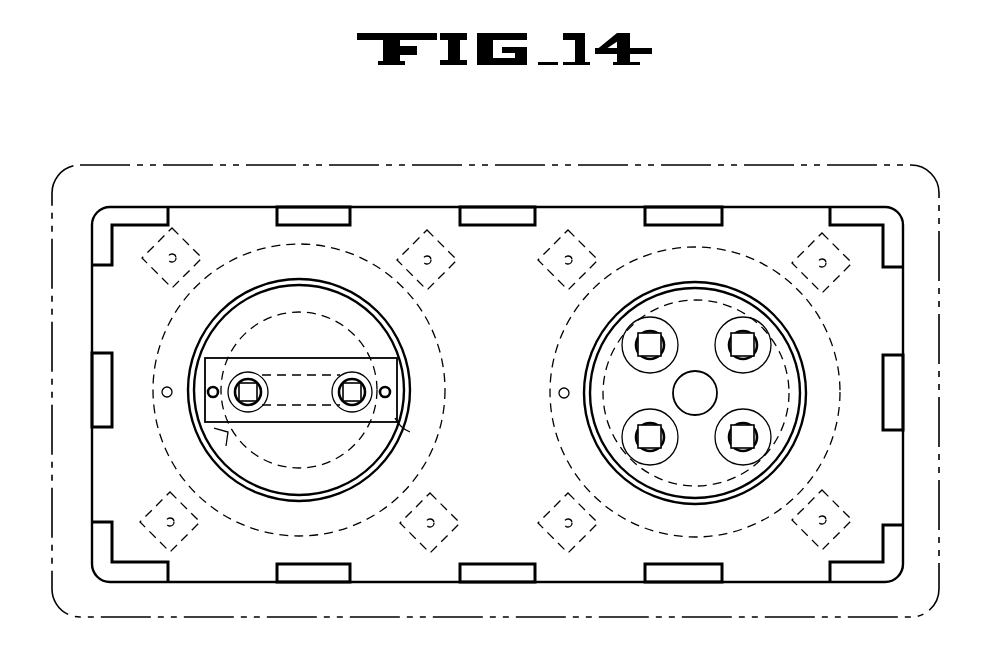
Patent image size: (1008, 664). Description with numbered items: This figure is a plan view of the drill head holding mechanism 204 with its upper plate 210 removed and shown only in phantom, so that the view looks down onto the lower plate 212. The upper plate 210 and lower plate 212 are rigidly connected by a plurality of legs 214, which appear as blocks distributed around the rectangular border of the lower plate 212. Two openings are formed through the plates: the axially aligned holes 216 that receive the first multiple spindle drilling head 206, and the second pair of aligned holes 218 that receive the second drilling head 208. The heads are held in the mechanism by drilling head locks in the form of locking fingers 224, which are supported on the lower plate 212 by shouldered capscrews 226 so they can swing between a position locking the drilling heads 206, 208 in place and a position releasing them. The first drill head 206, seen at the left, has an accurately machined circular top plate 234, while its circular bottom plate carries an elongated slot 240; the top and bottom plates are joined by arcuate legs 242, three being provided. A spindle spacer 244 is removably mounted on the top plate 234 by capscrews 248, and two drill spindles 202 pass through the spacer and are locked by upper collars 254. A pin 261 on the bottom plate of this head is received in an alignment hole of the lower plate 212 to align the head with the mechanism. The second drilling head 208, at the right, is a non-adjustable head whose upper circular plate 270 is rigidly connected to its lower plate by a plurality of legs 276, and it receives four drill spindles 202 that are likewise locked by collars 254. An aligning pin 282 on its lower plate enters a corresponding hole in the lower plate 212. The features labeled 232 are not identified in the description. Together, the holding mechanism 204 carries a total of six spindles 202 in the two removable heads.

The drill spindle 202 is at (250, 380).
The drill head holding mechanism 204 is at (594, 202).
The first multiple spindle drilling head 206 is at (320, 278).
The second drilling head 208 is at (722, 280).
The upper plate 210 is at (735, 166).
The lower plate 212 is at (568, 575).
The legs 214 is at (142, 210).
The axially aligned holes 216 is at (212, 434).
The second pair of aligned holes 218 is at (626, 484).
The locking fingers 224 is at (185, 240).
The shouldered capscrews 226 is at (545, 541).
The contact socket 232 is at (248, 407).
The circular top plate 234 is at (408, 322).
The elongated slot 240 is at (422, 362).
The arcuate legs 242 is at (275, 323).
The spindle spacer 244 is at (397, 418).
The capscrews 248 is at (210, 388).
The upper collars 254 is at (372, 428).
The pin 261 is at (165, 398).
The upper circular plate 270 is at (783, 432).
The legs 276 is at (628, 308).
The aligning pin 282 is at (559, 391).